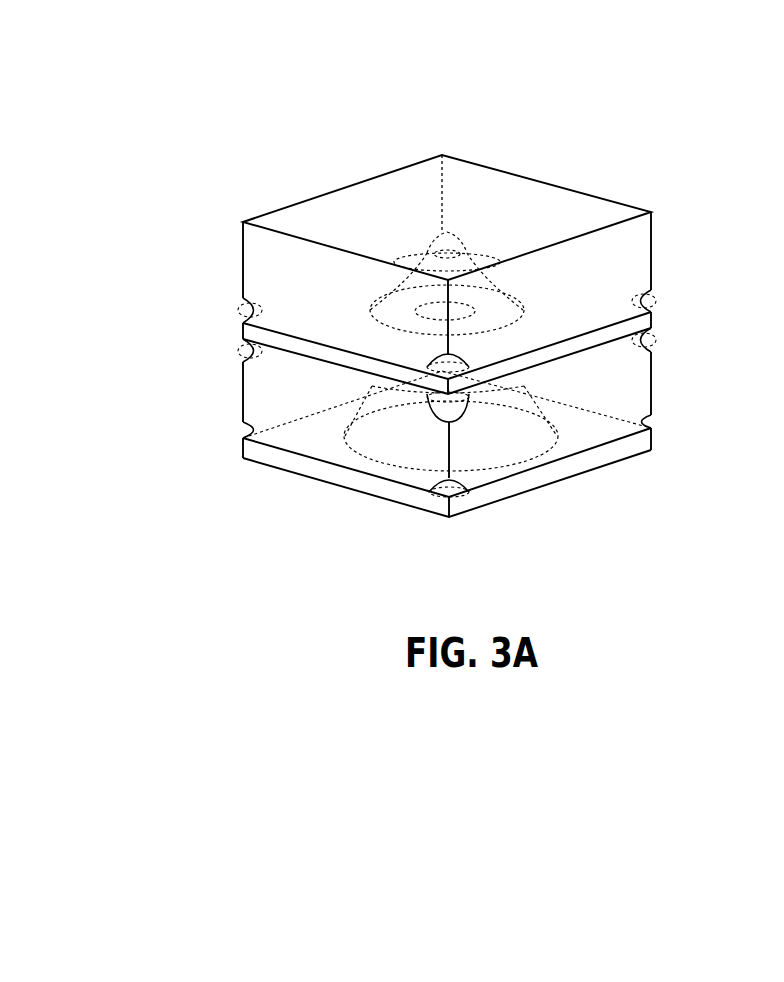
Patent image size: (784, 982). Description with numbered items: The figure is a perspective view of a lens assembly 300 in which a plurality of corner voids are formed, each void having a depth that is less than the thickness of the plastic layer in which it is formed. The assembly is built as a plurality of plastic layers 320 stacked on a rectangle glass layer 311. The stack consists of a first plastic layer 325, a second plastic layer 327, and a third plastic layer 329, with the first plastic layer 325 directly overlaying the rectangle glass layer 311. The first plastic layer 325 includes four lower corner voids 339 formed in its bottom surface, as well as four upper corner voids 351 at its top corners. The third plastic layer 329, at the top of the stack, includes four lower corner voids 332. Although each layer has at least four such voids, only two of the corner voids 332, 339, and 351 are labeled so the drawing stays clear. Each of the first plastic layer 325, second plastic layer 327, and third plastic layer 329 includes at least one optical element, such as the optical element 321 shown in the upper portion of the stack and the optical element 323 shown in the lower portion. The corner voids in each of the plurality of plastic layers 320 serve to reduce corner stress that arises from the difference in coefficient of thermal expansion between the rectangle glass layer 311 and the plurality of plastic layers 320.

The lens assembly 300 is at (332, 54).
The rectangle glass layer 311 is at (512, 496).
The plurality of plastic layers 320 is at (213, 435).
The optical element 321 is at (473, 268).
The optical element 323 is at (358, 452).
The first plastic layer 325 is at (653, 403).
The second plastic layer 327 is at (655, 326).
The third plastic layer 329 is at (652, 243).
The lower corner voids 332 is at (233, 310).
The lower corner voids 339 is at (243, 433).
The upper corner voids 351 is at (653, 344).